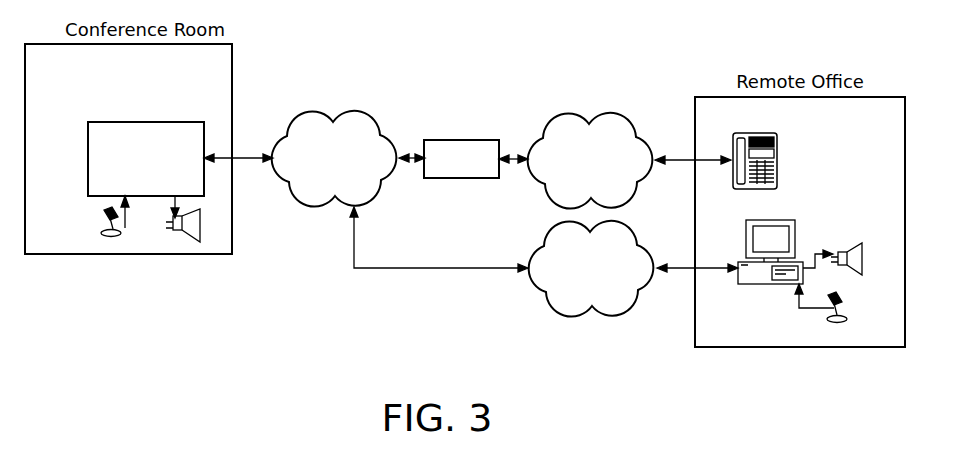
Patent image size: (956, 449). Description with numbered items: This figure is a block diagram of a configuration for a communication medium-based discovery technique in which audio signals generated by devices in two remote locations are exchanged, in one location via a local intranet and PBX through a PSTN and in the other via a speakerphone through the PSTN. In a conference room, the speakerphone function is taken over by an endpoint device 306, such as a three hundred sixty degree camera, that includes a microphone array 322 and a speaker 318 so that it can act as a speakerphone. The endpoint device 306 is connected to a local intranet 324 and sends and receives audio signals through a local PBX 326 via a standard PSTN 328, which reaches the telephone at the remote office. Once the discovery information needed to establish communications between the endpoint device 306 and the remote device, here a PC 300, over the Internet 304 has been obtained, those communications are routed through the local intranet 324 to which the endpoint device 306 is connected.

The PC 300 is at (772, 220).
The Internet 304 is at (575, 315).
The endpoint device 306 is at (144, 122).
The speaker 318 is at (200, 238).
The microphone array 322 is at (125, 228).
The local intranet 324 is at (318, 111).
The local PBX 326 is at (462, 140).
The PSTN 328 is at (571, 113).